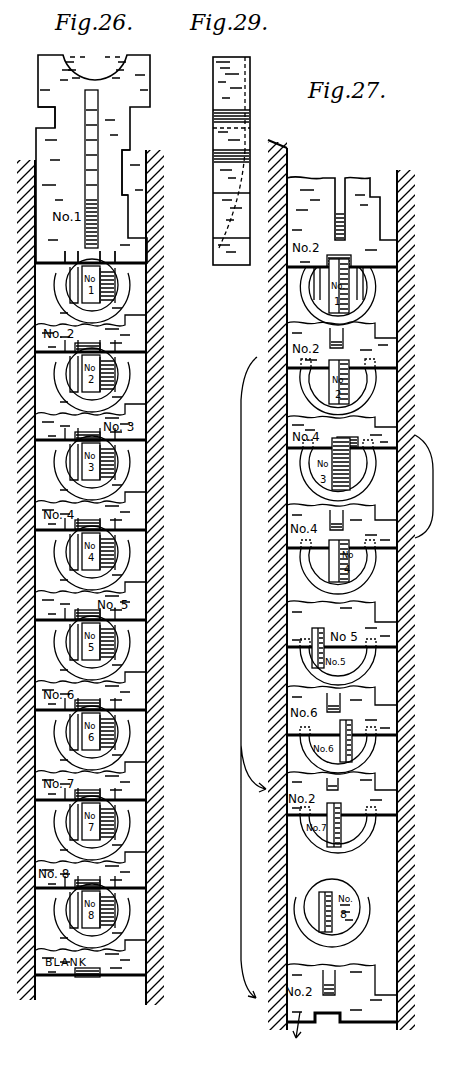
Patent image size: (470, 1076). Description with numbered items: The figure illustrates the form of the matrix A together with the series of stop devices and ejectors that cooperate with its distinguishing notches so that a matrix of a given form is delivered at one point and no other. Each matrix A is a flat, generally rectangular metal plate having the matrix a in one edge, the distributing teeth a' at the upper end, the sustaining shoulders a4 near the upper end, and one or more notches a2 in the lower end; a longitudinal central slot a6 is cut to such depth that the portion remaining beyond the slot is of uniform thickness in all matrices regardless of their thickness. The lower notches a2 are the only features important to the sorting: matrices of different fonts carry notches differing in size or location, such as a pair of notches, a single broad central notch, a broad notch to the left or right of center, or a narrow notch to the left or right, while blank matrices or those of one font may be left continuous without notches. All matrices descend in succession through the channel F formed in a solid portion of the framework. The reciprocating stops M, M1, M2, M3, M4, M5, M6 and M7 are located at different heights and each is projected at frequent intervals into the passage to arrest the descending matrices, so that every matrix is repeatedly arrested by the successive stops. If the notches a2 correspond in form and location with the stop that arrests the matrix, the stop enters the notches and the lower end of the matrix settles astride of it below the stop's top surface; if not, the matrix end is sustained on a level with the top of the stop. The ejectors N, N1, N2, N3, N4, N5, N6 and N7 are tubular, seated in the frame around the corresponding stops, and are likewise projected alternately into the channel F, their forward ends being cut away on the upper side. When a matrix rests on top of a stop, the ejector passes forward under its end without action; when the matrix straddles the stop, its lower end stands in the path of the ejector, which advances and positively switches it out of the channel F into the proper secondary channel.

In FIG. 26, the matrix A is at (37, 97).
In FIG. 29, the matrix A is at (255, 132).
In FIG. 27, the matrix A is at (326, 180).
In FIG. 26, the matrix a is at (116, 172).
In FIG. 29, the matrix a is at (221, 168).
In FIG. 26, the distributing teeth a' is at (96, 65).
In FIG. 26, the notches a2 is at (108, 250).
In FIG. 27, the notches a2 is at (346, 257).
In FIG. 26, the sustaining shoulders a4 is at (42, 106).
In FIG. 29, the sustaining shoulders a4 is at (221, 108).
In FIG. 26, the longitudinal central slot a6 is at (98, 148).
In FIG. 26, the channel F is at (138, 392).
In FIG. 27, the channel F is at (398, 383).
In FIG. 26, the reciprocating stop M is at (68, 289).
In FIG. 27, the reciprocating stop M is at (318, 290).
In FIG. 26, the reciprocating ejector N is at (120, 287).
In FIG. 27, the reciprocating ejector N is at (369, 293).
In FIG. 26, the reciprocating stop M1 is at (68, 378).
In FIG. 26, the reciprocating ejector N1 is at (120, 376).
In FIG. 26, the reciprocating stop M2 is at (68, 466).
In FIG. 26, the reciprocating ejector N2 is at (120, 464).
In FIG. 26, the reciprocating stop M3 is at (68, 556).
In FIG. 27, the reciprocating stop M3 is at (326, 568).
In FIG. 26, the reciprocating ejector N3 is at (120, 554).
In FIG. 27, the reciprocating ejector N3 is at (365, 570).
In FIG. 26, the reciprocating stop M4 is at (68, 646).
In FIG. 26, the reciprocating ejector N4 is at (120, 644).
In FIG. 26, the reciprocating stop M5 is at (68, 736).
In FIG. 26, the reciprocating ejector N5 is at (120, 734).
In FIG. 26, the reciprocating stop M6 is at (68, 826).
In FIG. 26, the reciprocating ejector N6 is at (120, 824).
In FIG. 26, the reciprocating stop M7 is at (68, 914).
In FIG. 27, the reciprocating stop M7 is at (320, 922).
In FIG. 26, the reciprocating ejector N7 is at (120, 912).